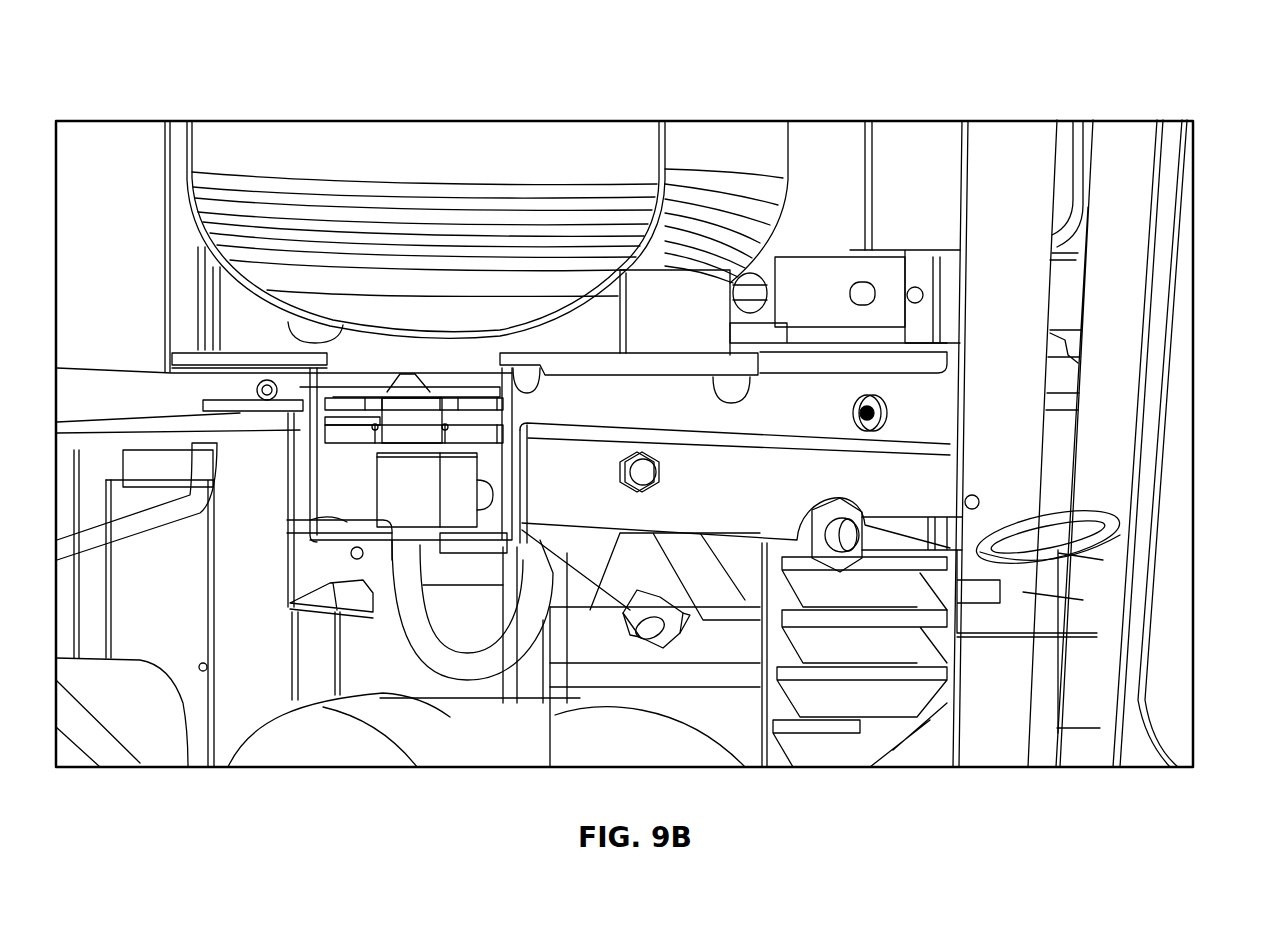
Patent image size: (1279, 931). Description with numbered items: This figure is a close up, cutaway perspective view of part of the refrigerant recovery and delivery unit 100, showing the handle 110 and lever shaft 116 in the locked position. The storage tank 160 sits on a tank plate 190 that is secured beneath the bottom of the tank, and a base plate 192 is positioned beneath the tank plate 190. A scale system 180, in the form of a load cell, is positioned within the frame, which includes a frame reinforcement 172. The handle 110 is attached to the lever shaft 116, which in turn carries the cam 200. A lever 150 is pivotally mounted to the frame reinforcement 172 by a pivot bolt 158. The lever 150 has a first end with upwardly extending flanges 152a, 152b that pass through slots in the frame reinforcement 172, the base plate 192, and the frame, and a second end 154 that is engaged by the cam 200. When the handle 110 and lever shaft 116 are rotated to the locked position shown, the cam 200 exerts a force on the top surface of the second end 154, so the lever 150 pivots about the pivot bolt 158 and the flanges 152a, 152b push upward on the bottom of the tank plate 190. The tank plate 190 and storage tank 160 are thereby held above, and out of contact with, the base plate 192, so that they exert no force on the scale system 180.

The refrigerant recovery and delivery unit 100 is at (1098, 95).
The handle 110 is at (1060, 538).
The lever shaft 116 is at (888, 540).
The lever 150 is at (407, 493).
The upwardly extending flange 152a is at (333, 468).
The upwardly extending flange 152b is at (528, 532).
The second end 154 is at (642, 573).
The pivot bolt 158 is at (643, 472).
The storage tank 160 is at (723, 163).
The frame reinforcement 172 is at (743, 580).
The scale system 180 is at (403, 543).
The tank plate 190 is at (193, 363).
The base plate 192 is at (233, 405).
The cam 200 is at (742, 497).